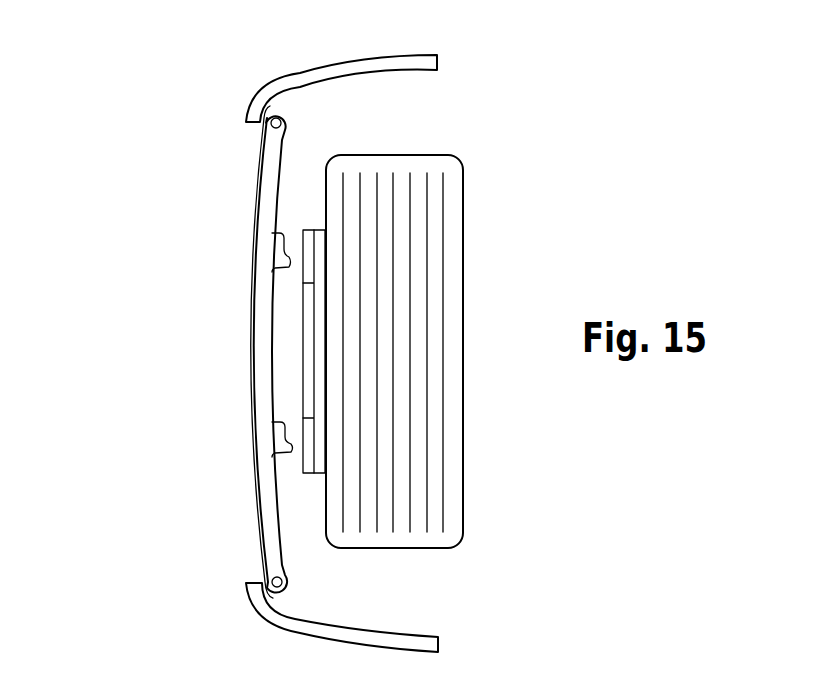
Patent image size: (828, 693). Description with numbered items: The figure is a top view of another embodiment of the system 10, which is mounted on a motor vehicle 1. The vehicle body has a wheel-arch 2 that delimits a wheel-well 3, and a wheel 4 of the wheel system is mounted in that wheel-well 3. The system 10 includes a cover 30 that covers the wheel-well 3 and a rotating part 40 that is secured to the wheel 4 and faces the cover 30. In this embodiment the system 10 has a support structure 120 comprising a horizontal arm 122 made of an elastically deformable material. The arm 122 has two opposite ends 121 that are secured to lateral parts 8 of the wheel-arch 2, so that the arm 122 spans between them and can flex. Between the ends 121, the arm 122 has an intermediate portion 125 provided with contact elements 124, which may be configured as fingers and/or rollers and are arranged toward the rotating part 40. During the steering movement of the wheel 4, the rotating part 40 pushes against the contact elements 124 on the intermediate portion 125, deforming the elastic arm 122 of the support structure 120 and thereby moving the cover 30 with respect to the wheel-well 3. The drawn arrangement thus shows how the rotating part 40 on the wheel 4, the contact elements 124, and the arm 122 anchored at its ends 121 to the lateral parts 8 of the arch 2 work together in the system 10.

The motor vehicle 1 is at (160, 80).
The vehicle body wheel-arch 2 is at (388, 68).
The wheel-well 3 is at (330, 120).
The wheel 4 is at (437, 167).
The lateral parts of arch 8 is at (284, 84).
The system 10 is at (126, 445).
The cover 30 is at (253, 478).
The rotating part 40 is at (307, 279).
The support structure 120 is at (200, 542).
The opposite ends 121 is at (270, 126).
The horizontal arm 122 is at (262, 381).
The contact elements 124 is at (275, 236).
The intermediate portion 125 is at (223, 347).